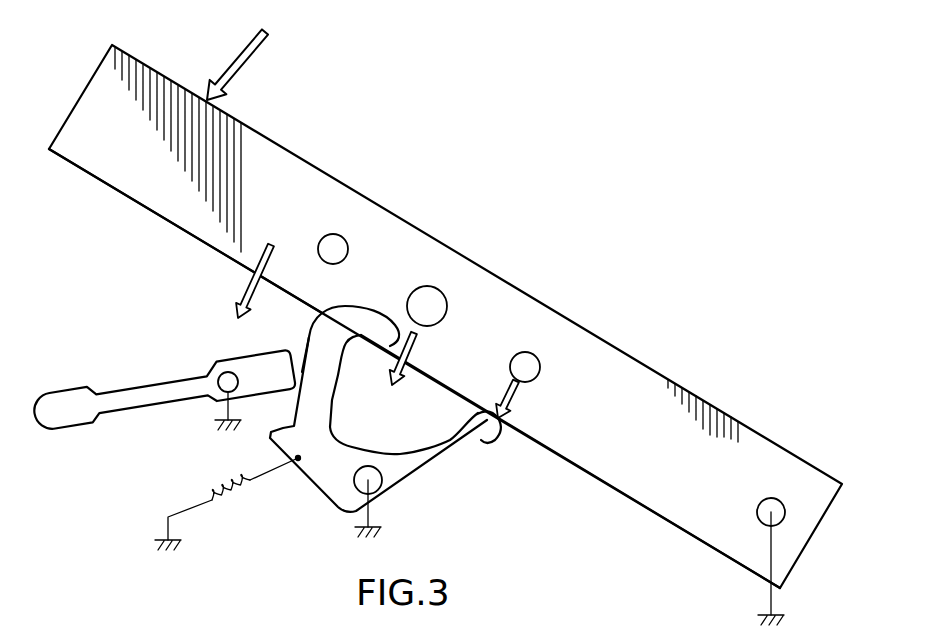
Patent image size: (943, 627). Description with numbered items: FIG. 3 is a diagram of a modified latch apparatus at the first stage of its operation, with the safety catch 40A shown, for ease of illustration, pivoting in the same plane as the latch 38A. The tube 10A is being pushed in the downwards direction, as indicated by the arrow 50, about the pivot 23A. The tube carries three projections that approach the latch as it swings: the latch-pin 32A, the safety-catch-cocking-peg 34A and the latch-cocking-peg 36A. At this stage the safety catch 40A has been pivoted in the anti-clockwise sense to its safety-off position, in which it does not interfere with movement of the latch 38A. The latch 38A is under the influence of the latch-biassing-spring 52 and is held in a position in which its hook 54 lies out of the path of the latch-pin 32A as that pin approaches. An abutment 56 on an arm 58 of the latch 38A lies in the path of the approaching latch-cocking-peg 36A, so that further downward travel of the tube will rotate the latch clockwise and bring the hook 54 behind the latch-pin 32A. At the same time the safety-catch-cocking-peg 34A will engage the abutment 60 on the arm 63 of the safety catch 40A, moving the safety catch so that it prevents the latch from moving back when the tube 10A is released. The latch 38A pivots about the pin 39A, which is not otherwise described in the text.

The tube 10A is at (337, 187).
The arrow 50 is at (230, 85).
The safety-catch-cocking-peg 34A is at (330, 243).
The latch-pin 32A is at (442, 308).
The latch-cocking-peg 36A is at (537, 368).
The pivot 23A is at (762, 510).
The hook 54 is at (355, 315).
The latch 38A is at (323, 382).
The abutment 56 is at (477, 443).
The arm 58 is at (435, 467).
The latch pivot pin 39A is at (377, 487).
The safety catch 40A is at (142, 392).
The arm 63 is at (243, 368).
The abutment 60 is at (267, 353).
The latch-biassing-spring 52 is at (210, 500).